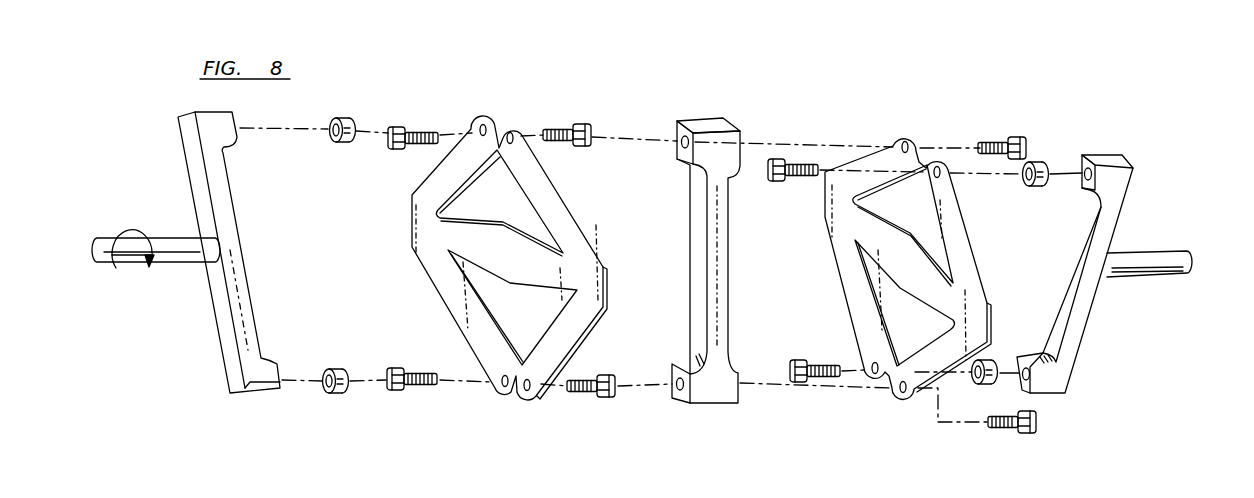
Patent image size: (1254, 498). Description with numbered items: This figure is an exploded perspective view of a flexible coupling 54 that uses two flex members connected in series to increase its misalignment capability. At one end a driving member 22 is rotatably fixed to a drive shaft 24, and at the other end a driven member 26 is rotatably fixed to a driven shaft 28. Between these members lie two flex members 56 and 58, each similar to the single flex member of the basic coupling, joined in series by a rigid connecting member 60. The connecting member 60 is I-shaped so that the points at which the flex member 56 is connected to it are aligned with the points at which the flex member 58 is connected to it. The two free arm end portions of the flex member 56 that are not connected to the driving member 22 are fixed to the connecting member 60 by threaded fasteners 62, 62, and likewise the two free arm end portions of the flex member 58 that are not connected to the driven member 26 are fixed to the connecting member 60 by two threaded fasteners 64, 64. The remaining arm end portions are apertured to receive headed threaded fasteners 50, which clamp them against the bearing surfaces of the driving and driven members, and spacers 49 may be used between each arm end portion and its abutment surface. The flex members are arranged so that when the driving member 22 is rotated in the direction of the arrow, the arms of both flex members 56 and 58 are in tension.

The driving member 22 is at (188, 139).
The drive shaft 24 is at (170, 240).
The driven member 26 is at (1072, 353).
The driven shaft 28 is at (1148, 254).
The spacer 49 is at (346, 118).
The headed threaded fastener 50 is at (562, 123).
The coupling 54 is at (843, 95).
The flex member 56 is at (582, 246).
The flex member 58 is at (972, 262).
The rigid connecting member 60 is at (714, 124).
The threaded fasteners 62 is at (400, 125).
The threaded fasteners 64 is at (1016, 137).